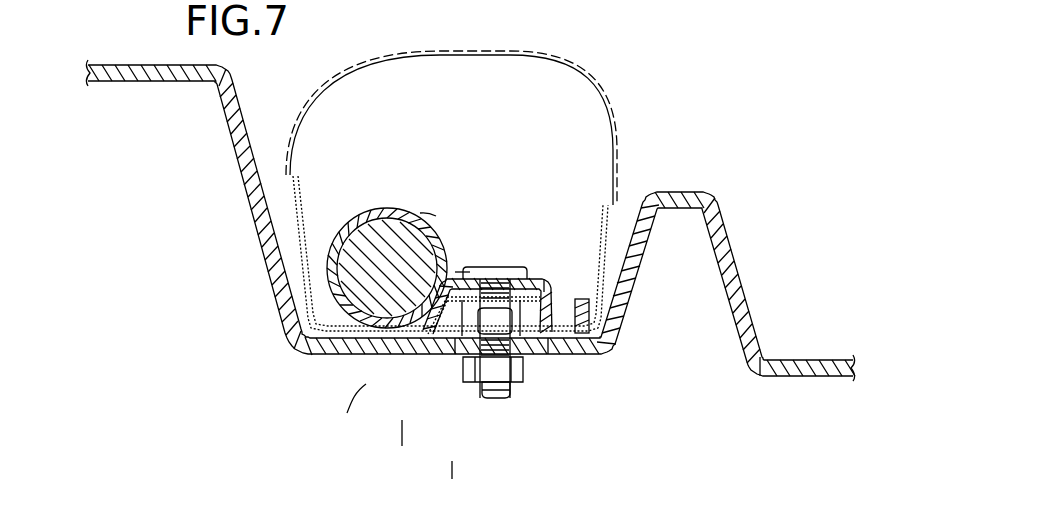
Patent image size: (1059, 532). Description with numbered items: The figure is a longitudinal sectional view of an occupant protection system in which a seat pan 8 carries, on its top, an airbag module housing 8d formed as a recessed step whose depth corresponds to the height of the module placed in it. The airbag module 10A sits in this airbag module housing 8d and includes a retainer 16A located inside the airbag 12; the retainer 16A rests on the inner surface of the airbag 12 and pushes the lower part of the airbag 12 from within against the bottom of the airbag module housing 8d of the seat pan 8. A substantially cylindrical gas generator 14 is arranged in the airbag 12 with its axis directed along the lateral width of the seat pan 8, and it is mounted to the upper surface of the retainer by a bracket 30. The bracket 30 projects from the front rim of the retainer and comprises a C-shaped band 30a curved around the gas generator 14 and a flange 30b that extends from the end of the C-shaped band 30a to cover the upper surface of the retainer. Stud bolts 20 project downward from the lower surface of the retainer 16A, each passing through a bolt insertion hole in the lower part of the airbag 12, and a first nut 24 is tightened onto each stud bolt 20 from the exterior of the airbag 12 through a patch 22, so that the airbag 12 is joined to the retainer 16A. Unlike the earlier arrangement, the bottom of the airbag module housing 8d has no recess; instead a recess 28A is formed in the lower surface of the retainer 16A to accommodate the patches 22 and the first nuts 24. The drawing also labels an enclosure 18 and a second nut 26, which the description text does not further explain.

The airbag module 10A is at (578, 68).
The airbag 12 is at (600, 209).
The enclosure 18 is at (607, 218).
The gas generator 14 is at (362, 211).
The bracket 30 is at (465, 207).
The C-shaped band 30a is at (416, 213).
The flange 30b is at (462, 271).
The stud bolt 20 is at (500, 265).
The retainer 16A is at (559, 285).
The airbag module housing 8d is at (299, 325).
The patch 22 is at (447, 353).
The first nut 24 is at (447, 359).
The second nut 26 is at (462, 384).
The recess 28A is at (546, 358).
The seat pan 8 is at (779, 383).